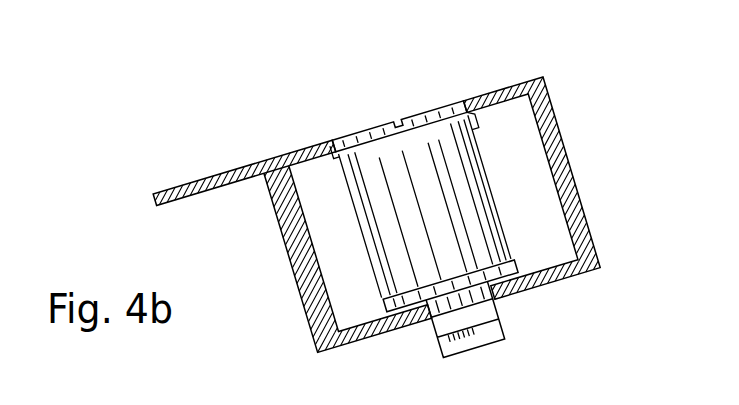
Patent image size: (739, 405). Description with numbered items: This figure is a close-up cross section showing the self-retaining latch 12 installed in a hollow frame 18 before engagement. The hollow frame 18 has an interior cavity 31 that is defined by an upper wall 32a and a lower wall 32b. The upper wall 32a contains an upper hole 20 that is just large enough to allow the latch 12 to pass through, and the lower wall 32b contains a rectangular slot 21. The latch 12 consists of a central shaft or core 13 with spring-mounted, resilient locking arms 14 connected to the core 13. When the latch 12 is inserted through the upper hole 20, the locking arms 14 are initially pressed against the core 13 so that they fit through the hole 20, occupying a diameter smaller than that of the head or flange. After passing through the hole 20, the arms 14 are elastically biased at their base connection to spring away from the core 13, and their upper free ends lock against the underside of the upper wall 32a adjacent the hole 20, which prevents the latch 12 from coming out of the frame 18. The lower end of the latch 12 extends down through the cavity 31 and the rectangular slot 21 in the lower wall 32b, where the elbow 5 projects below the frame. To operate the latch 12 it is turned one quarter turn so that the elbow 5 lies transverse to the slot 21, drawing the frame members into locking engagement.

The upper hole 20 is at (333, 143).
The hollow frame 18 is at (297, 238).
The cavity 31 is at (340, 302).
The upper wall 32a is at (493, 95).
The lower wall 32b is at (552, 277).
The self-retaining latch 12 is at (375, 128).
The core 13 is at (427, 148).
The locking arms 14 is at (355, 226).
The rectangular slot 21 is at (433, 318).
The elbow 5 is at (502, 330).